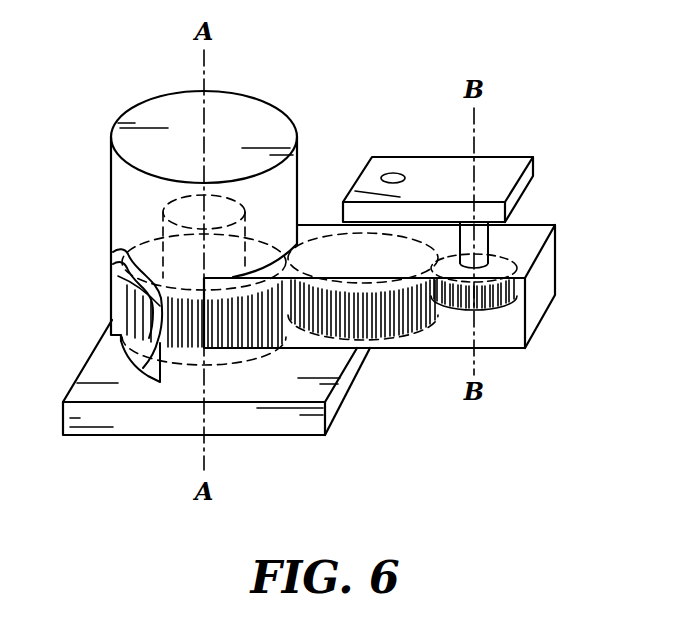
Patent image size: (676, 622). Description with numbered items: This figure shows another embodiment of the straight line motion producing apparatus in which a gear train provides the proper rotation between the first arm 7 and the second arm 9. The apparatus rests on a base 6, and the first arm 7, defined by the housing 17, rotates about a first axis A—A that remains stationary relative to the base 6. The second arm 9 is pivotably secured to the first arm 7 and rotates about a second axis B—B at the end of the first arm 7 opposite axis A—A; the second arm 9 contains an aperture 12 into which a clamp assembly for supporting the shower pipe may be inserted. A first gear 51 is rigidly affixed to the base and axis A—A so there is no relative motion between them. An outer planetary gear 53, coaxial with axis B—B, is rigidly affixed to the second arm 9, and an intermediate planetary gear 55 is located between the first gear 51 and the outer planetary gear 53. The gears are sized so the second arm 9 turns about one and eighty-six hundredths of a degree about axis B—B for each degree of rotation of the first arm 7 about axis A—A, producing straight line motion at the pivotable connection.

The base 6 is at (107, 373).
The first arm 7 is at (533, 305).
The second arm 9 is at (510, 168).
The aperture 12 is at (391, 172).
The housing 17 is at (258, 132).
The first gear 51 is at (120, 262).
The outer planetary gear 53 is at (512, 258).
The intermediate planetary gear 55 is at (400, 340).